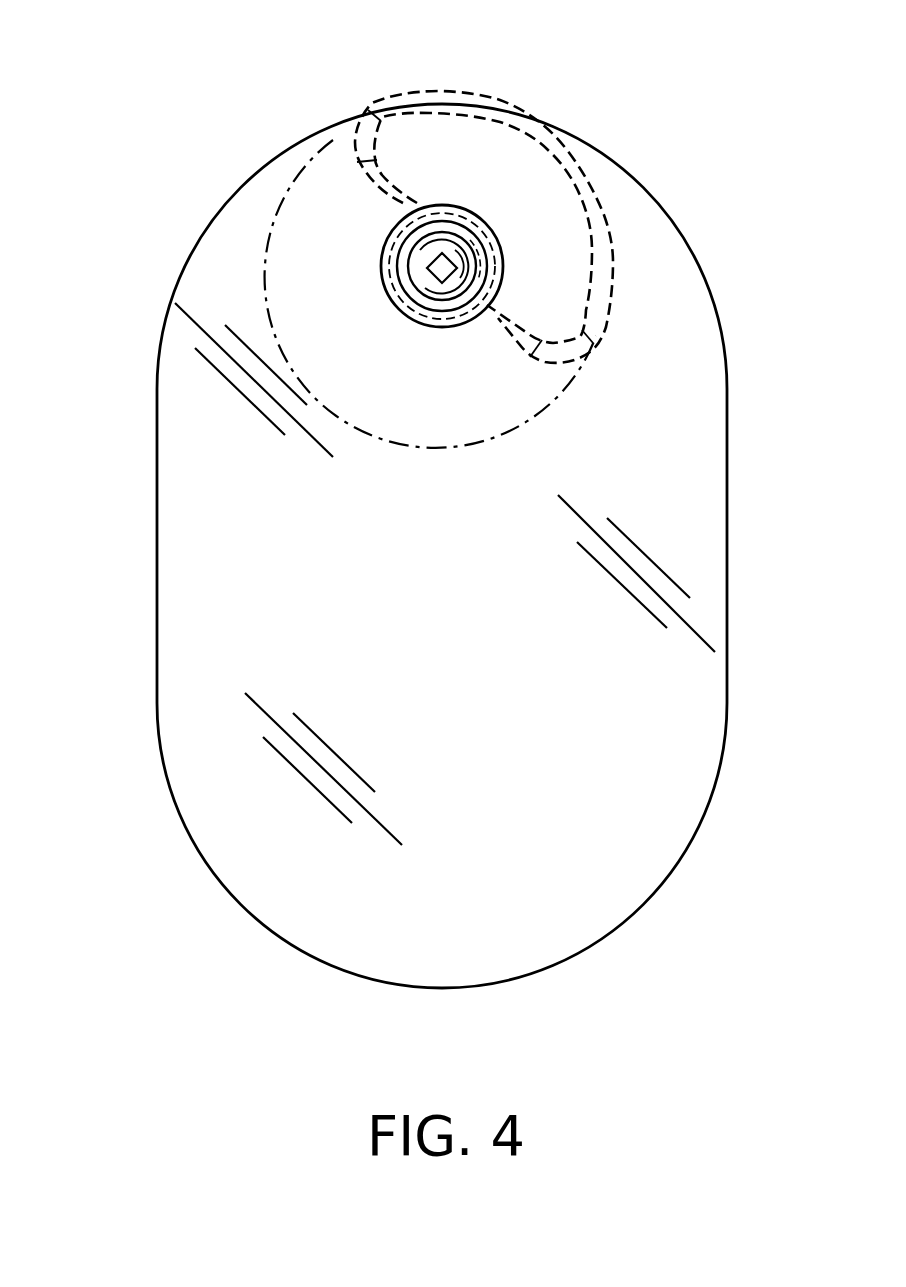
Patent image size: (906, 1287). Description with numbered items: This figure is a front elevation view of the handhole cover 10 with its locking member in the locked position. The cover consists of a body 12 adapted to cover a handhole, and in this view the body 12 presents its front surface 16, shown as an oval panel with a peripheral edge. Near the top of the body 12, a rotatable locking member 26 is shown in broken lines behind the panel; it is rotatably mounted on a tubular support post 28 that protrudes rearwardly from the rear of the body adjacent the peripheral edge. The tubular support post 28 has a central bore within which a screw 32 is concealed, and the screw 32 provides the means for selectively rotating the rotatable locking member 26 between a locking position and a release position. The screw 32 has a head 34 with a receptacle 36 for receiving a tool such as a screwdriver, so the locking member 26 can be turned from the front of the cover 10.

The handhole cover 10 is at (432, 586).
The body 12 is at (683, 792).
The front surface 16 is at (585, 882).
The rotatable locking member 26 is at (473, 93).
The tubular support post 28 is at (383, 275).
The screw 32 is at (415, 292).
The head 34 is at (438, 284).
The receptacle 36 is at (448, 270).